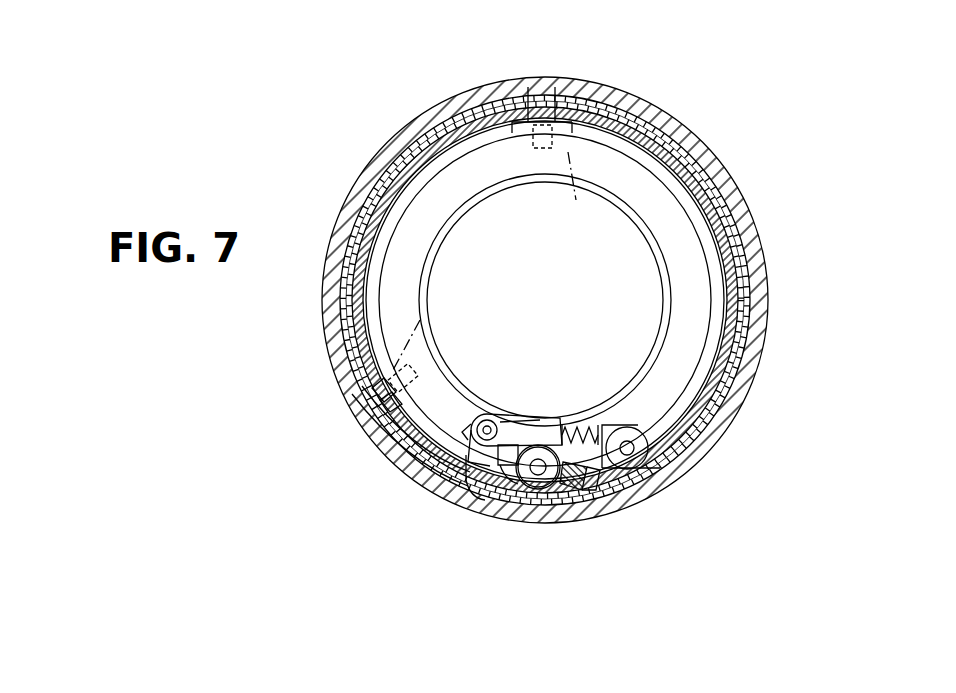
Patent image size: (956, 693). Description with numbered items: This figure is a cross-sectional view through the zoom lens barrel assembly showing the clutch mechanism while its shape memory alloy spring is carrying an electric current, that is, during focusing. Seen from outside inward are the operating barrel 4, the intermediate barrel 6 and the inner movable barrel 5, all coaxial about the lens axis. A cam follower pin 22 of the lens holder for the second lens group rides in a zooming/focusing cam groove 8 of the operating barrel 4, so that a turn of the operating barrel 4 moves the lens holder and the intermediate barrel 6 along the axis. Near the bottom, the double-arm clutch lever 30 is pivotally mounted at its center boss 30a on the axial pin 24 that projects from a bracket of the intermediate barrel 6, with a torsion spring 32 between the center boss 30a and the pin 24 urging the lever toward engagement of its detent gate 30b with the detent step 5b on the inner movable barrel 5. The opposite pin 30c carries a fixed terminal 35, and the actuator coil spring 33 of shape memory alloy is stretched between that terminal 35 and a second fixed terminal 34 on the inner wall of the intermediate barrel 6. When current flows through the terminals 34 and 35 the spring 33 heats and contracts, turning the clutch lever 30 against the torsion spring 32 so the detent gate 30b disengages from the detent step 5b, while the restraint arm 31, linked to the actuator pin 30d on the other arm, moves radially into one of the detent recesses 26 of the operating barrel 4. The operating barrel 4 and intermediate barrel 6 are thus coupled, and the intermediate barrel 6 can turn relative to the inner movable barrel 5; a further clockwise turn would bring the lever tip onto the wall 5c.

The operating barrel 4 is at (753, 342).
The inner movable barrel 5 is at (433, 148).
The detent step 5b is at (472, 503).
The wall 5c is at (450, 447).
The intermediate barrel 6 is at (447, 127).
The zooming/focusing cam groove 8 is at (542, 90).
The cam follower pin 22 is at (432, 305).
The axial pin 24 is at (540, 478).
The detent recess 26 is at (588, 478).
The clutch lever 30 is at (487, 455).
The center boss 30a is at (534, 478).
The detent gate 30b is at (468, 430).
The pin 30c is at (497, 432).
The actuator pin 30d is at (578, 485).
The restraint arm 31 is at (648, 472).
The torsion spring 32 is at (513, 472).
The actuator coil spring 33 is at (590, 422).
The fixed terminal 34 is at (640, 462).
The fixed terminal 35 is at (490, 422).